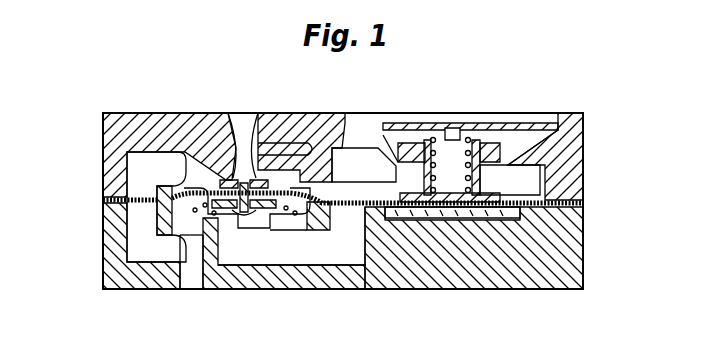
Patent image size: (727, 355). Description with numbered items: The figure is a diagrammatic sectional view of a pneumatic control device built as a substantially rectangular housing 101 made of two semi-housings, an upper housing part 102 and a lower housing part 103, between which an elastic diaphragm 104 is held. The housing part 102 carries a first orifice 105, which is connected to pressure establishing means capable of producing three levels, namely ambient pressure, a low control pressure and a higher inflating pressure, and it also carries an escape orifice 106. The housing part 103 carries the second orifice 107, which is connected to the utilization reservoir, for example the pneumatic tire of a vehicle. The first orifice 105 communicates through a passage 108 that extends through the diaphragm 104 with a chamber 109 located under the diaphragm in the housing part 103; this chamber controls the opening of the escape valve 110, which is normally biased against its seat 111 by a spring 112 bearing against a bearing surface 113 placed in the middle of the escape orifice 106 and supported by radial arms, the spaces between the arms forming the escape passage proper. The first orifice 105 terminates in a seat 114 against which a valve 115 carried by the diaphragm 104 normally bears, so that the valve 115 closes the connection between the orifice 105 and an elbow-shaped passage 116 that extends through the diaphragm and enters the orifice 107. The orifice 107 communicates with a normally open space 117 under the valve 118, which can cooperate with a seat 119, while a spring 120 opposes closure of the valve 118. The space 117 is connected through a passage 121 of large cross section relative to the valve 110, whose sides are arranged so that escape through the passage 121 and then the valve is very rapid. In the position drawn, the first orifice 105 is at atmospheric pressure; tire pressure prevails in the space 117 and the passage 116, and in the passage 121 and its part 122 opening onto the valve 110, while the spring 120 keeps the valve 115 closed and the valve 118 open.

The housing 101 is at (584, 270).
The housing part 102 is at (575, 141).
The housing part 103 is at (568, 243).
The elastic diaphragm 104 is at (518, 212).
The first orifice 105 is at (246, 150).
The escape orifice 106 is at (405, 140).
The second orifice 107 is at (185, 272).
The passage 108 is at (290, 140).
The chamber 109 is at (483, 212).
The escape valve 110 is at (496, 140).
The seat 111 is at (545, 140).
The spring 112 is at (436, 140).
The bearing surface 113 is at (470, 128).
The seat 114 is at (236, 178).
The valve 115 is at (256, 178).
The passage 116 is at (135, 236).
The space 117 is at (197, 215).
The valve 118 is at (257, 215).
The seat 119 is at (228, 265).
The spring 120 is at (300, 215).
The passage 121 is at (348, 248).
The part 122 is at (535, 177).